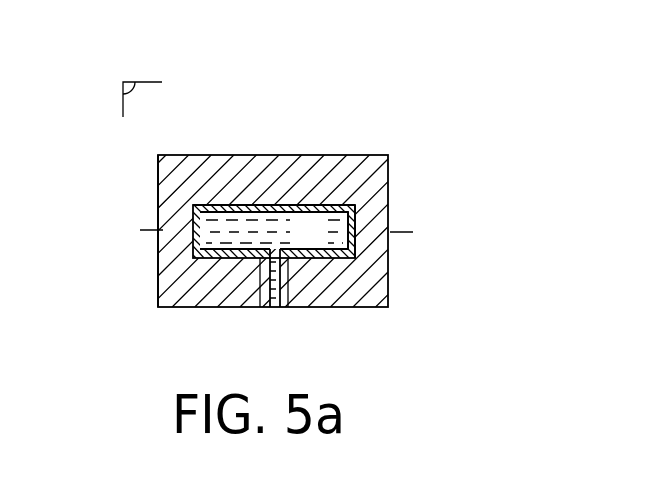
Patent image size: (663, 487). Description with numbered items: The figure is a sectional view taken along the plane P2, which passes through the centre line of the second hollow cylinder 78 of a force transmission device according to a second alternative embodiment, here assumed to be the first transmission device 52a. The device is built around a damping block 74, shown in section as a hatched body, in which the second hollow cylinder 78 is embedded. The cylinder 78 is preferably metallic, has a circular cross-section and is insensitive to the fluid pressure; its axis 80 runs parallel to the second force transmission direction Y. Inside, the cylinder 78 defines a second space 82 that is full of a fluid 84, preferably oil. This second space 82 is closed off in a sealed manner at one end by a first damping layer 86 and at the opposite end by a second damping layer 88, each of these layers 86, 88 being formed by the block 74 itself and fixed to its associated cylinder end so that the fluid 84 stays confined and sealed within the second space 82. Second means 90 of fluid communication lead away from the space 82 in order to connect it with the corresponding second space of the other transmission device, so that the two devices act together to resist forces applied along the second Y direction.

The first transmission device 52a is at (369, 110).
The damping block 74 is at (155, 159).
The second hollow cylinder 78 is at (259, 203).
The axis 80 is at (145, 230).
The second space 82 is at (212, 203).
The fluid 84 is at (323, 243).
The first damping layer 86 is at (365, 215).
The second damping layer 88 is at (165, 248).
The second means of fluid communication 90 is at (285, 295).
The plane P2 is at (126, 80).